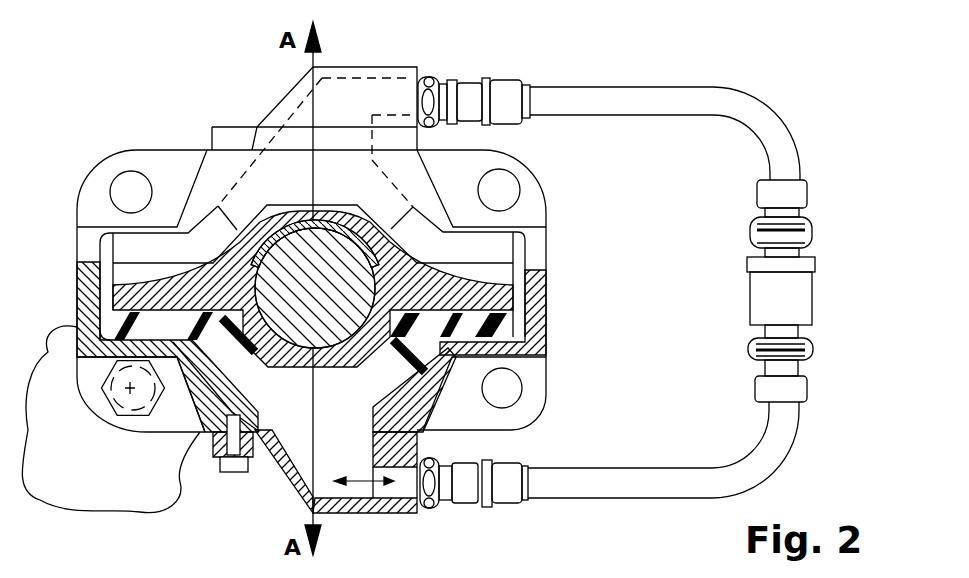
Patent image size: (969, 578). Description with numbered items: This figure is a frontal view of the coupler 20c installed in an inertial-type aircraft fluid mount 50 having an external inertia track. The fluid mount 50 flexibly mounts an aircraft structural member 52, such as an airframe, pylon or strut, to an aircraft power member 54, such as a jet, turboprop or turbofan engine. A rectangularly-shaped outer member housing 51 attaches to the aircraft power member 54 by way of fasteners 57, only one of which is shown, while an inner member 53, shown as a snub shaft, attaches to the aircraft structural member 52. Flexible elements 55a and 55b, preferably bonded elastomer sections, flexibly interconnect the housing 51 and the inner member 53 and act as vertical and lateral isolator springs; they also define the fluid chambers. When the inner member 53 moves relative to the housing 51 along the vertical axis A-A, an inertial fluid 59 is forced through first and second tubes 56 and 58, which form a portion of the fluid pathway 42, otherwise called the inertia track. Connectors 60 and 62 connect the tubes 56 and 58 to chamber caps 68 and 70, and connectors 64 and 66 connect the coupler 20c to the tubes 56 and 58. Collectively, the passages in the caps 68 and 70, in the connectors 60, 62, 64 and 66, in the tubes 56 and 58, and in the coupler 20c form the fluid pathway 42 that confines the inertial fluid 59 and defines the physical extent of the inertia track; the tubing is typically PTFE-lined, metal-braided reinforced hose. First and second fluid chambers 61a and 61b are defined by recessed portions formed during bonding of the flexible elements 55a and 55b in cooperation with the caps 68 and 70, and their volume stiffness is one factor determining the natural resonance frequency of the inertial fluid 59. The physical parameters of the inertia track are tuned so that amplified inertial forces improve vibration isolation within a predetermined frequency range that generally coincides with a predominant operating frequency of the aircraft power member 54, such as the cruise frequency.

The chamber cap 70 is at (357, 68).
The connector 62 is at (478, 80).
The first tube 56 is at (675, 117).
The outer member housing 51 is at (548, 224).
The connector 64 is at (753, 188).
The coupler 20c is at (741, 293).
The connector 66 is at (755, 385).
The second tube 58 is at (660, 467).
The fluid pathway 42 is at (625, 498).
The connector 60 is at (468, 504).
The chamber cap 68 is at (333, 514).
The inertial fluid 59 is at (300, 463).
The fluid mount 50 is at (268, 483).
The fastener 57 is at (100, 393).
The aircraft power member 54 is at (112, 482).
The first fluid chamber 61a is at (302, 195).
The second fluid chamber 61b is at (307, 423).
The flexible element 55a is at (173, 262).
The flexible element 55b is at (178, 337).
The aircraft structural member 52 is at (357, 300).
The inner member 53 is at (497, 303).